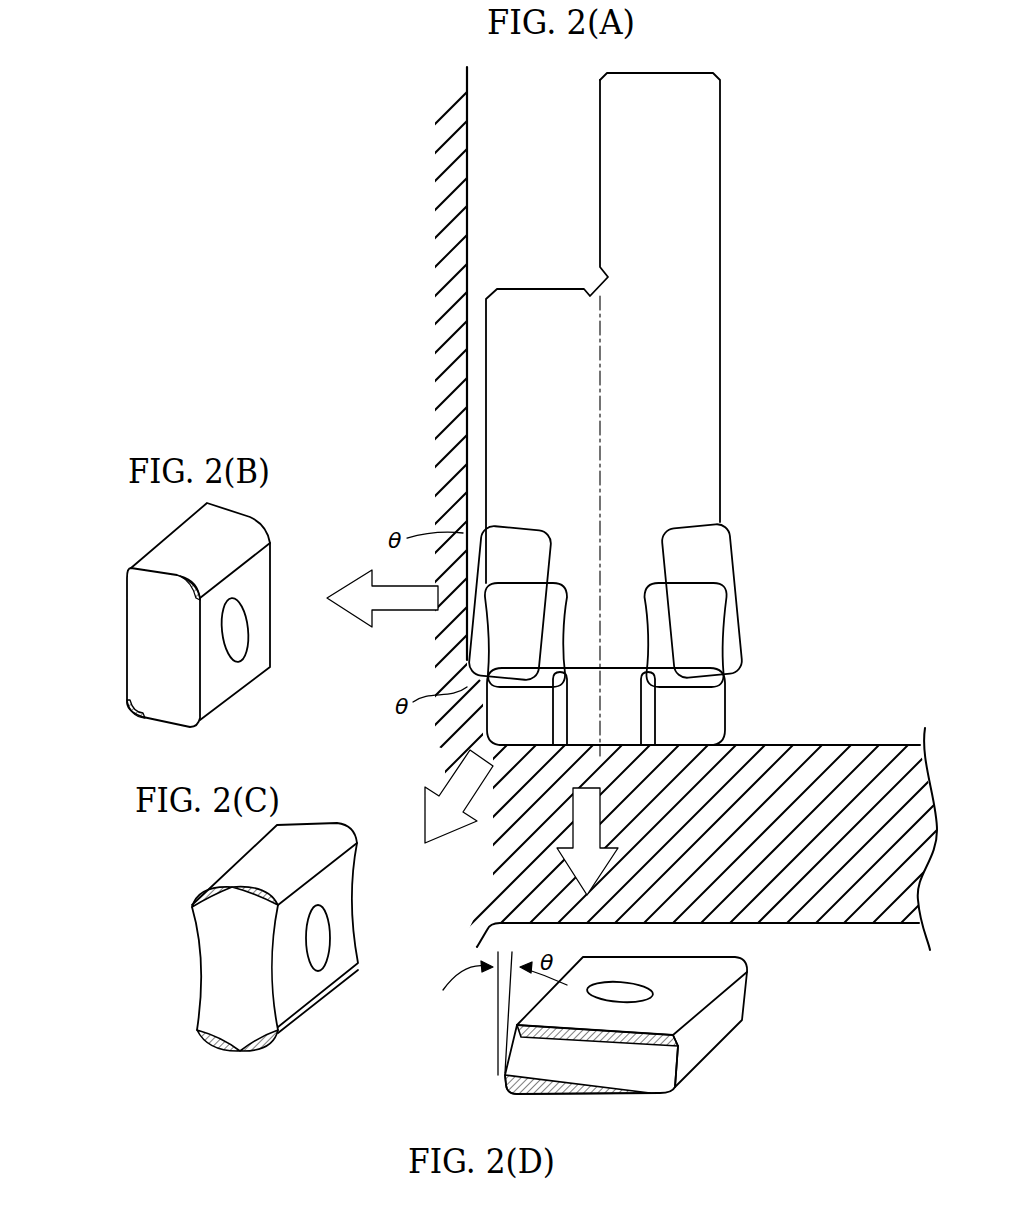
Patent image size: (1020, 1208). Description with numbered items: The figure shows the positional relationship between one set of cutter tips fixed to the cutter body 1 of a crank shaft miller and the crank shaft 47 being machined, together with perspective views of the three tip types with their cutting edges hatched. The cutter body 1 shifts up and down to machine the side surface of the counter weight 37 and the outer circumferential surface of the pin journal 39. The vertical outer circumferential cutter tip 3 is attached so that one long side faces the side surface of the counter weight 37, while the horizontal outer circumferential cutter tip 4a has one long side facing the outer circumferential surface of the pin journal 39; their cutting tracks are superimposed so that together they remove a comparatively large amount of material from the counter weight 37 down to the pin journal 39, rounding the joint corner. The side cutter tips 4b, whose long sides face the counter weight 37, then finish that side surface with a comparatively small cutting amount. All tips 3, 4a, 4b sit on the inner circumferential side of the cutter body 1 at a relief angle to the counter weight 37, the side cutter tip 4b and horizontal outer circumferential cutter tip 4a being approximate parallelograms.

In FIG. 2A, the cutter body 1 is at (722, 211).
In FIG. 2A, the vertical outer circumferential cutter tip 3 is at (484, 641).
In FIG. 2C, the vertical outer circumferential cutter tip 3 is at (198, 960).
In FIG. 2A, the horizontal outer circumferential cutter tip 4a is at (723, 700).
In FIG. 2D, the horizontal outer circumferential cutter tip 4a is at (647, 1093).
In FIG. 2A, the side cutter tip 4b is at (470, 520).
In FIG. 2B, the side cutter tip 4b is at (133, 637).
In FIG. 2A, the counter weight 37 is at (467, 188).
In FIG. 2A, the pin journal 39 is at (843, 745).
In FIG. 2A, the crank shaft 47 is at (408, 270).